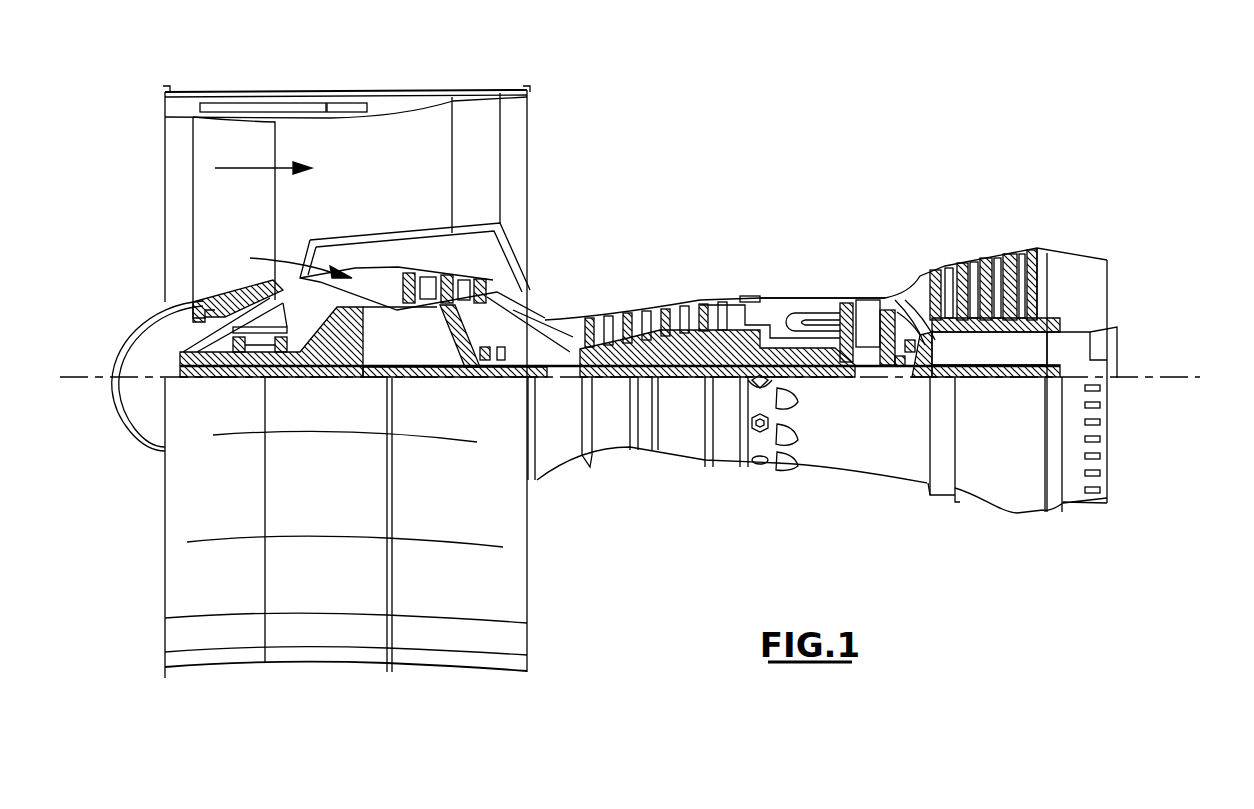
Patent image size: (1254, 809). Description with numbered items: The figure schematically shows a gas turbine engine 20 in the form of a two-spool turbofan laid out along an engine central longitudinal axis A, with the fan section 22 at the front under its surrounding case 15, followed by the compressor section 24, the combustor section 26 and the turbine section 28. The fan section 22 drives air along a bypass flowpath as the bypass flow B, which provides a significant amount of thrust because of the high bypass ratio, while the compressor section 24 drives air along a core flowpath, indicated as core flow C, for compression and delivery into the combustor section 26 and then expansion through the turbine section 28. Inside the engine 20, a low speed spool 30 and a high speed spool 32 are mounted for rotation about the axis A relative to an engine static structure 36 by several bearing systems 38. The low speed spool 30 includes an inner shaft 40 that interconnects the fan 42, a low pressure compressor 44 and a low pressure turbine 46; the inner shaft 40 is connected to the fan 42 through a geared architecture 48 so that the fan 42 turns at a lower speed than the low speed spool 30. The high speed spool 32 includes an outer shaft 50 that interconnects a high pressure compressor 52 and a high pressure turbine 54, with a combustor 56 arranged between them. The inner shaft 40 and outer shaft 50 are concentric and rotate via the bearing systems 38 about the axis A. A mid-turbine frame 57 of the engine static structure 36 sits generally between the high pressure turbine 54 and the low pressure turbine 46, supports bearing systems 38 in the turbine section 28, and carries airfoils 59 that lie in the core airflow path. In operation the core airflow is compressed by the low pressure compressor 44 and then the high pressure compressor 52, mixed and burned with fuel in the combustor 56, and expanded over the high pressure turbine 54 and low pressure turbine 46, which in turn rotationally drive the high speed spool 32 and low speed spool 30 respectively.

The gas turbine engine 20 is at (805, 146).
The fan section 22 is at (279, 90).
The fan case / nacelle 15 is at (345, 96).
The fan 42 is at (219, 222).
The low pressure compressor 44 is at (443, 288).
The compressor section 24 is at (576, 290).
The high pressure compressor 52 is at (658, 343).
The high speed spool 32 is at (724, 312).
The combustor section 26 is at (800, 276).
The combustor 56 is at (800, 318).
The high pressure turbine 54 is at (869, 305).
The mid-turbine frame 57 is at (905, 294).
The turbine section 28 is at (946, 241).
The low pressure turbine 46 is at (994, 268).
The airfoils 59 is at (942, 345).
The bearing systems 38 is at (485, 370).
The geared architecture 48 is at (353, 355).
The inner shaft 40 is at (547, 380).
The low speed spool 30 is at (685, 378).
The engine static structure 36 is at (725, 465).
The outer shaft 50 is at (810, 378).
The engine central longitudinal axis A is at (1200, 377).
The bypass flow B is at (248, 165).
The core flow C is at (290, 262).